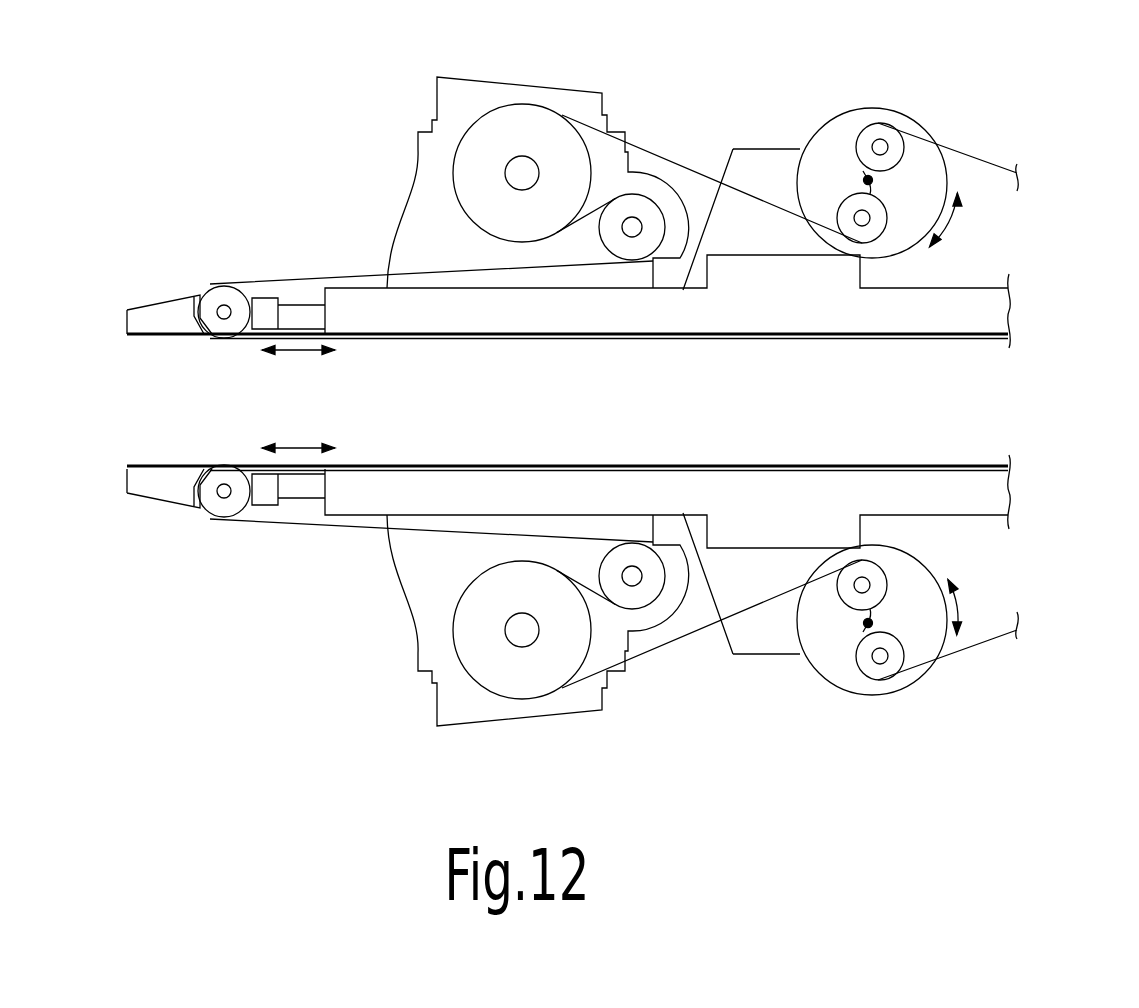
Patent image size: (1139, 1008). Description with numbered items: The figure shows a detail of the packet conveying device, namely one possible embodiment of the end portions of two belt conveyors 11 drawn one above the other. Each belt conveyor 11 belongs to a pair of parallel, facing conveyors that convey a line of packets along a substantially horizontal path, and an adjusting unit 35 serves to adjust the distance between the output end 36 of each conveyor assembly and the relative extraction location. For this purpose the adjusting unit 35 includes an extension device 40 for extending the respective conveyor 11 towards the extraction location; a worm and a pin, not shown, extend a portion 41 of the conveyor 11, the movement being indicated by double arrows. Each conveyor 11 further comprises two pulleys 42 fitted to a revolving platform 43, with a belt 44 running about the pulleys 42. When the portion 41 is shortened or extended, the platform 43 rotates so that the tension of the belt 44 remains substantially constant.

The belt conveyor 11 is at (1031, 284).
The adjusting unit 35 is at (213, 170).
The output end 36 is at (188, 273).
The extension device 40 is at (300, 245).
The portion 41 is at (280, 370).
The pulley 42 is at (882, 128).
The revolving platform 43 is at (827, 142).
The belt 44 is at (690, 170).